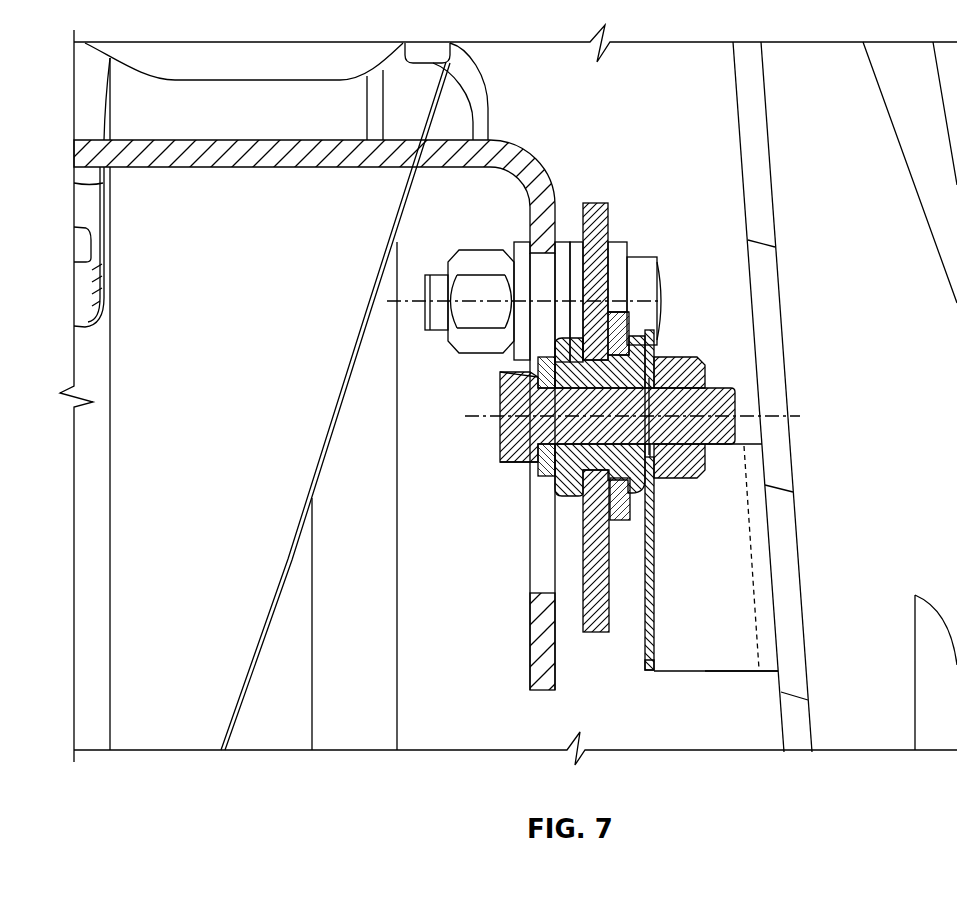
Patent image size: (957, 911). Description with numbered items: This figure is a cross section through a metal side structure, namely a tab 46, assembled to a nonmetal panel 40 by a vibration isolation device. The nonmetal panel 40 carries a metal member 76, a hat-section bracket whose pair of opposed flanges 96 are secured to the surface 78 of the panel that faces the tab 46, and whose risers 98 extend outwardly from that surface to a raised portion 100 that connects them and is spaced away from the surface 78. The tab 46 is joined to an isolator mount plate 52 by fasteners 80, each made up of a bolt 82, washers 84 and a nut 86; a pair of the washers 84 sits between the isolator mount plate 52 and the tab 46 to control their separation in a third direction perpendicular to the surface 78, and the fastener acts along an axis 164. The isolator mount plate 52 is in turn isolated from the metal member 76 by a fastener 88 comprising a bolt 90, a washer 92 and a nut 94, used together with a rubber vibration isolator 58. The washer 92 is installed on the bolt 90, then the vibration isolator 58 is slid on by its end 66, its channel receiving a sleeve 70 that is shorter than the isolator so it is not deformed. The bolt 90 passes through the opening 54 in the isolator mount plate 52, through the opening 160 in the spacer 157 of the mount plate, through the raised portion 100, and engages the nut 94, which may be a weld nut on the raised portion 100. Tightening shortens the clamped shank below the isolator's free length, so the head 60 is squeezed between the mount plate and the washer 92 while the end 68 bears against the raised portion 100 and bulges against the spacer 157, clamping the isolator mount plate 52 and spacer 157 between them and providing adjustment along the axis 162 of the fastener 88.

The nonmetal panel 40 is at (771, 185).
The tab 46 is at (529, 690).
The isolator mount plate 52 is at (597, 203).
The opening 54 is at (588, 342).
The vibration isolator 58 is at (596, 482).
The head 60 is at (578, 480).
The end 66 is at (560, 492).
The end 68 is at (654, 478).
The sleeve 70 is at (540, 444).
The metal member 76 is at (692, 672).
The surface 78 is at (740, 140).
The fasteners 80 is at (660, 268).
The bolt 82 is at (642, 257).
The washers 84 is at (563, 242).
The nut 86 is at (480, 250).
The fastener 88 is at (502, 376).
The bolt 90 is at (503, 410).
The washer 92 is at (541, 470).
The nut 94 is at (690, 358).
The flanges 96 is at (767, 672).
The risers 98 is at (732, 672).
The raised portion 100 is at (632, 335).
The spacer 157 is at (637, 322).
The opening 160 is at (655, 378).
The axis 162 is at (796, 416).
The axis 164 is at (395, 301).